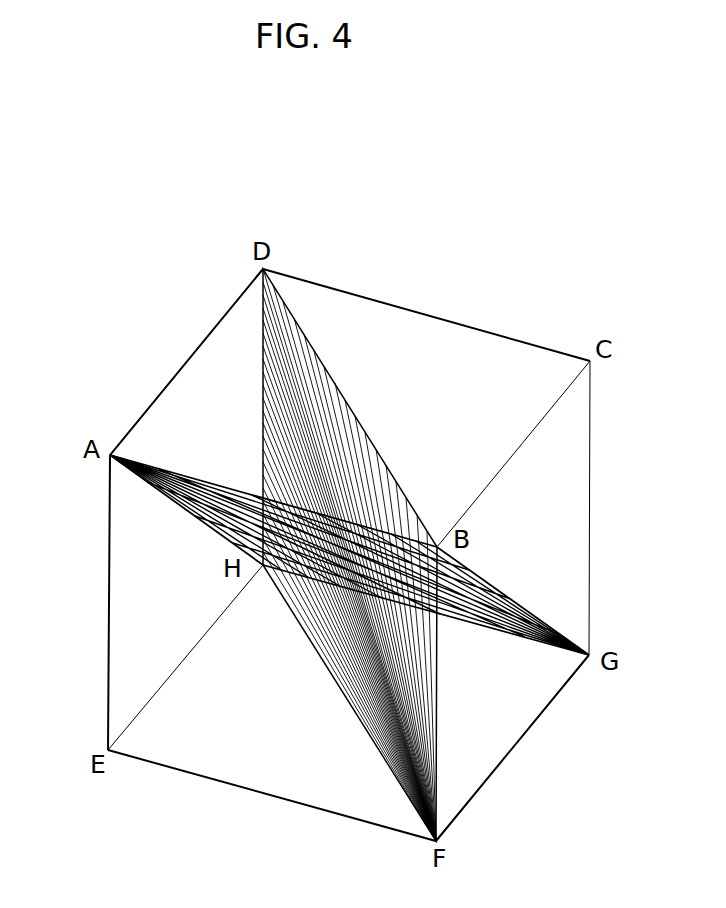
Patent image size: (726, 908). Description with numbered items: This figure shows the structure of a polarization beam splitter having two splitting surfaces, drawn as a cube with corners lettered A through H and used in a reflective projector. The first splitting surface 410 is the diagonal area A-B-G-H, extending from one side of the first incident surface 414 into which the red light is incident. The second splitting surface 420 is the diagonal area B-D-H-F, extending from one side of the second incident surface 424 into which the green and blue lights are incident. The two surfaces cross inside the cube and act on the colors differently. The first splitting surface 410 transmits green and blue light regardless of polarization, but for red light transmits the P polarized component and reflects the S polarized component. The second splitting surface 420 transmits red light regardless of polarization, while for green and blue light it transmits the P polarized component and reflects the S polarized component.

The first splitting surface 410 is at (187, 513).
The second splitting surface 420 is at (290, 380).
The second incident surface 424 is at (165, 425).
The first incident surface 414 is at (495, 728).